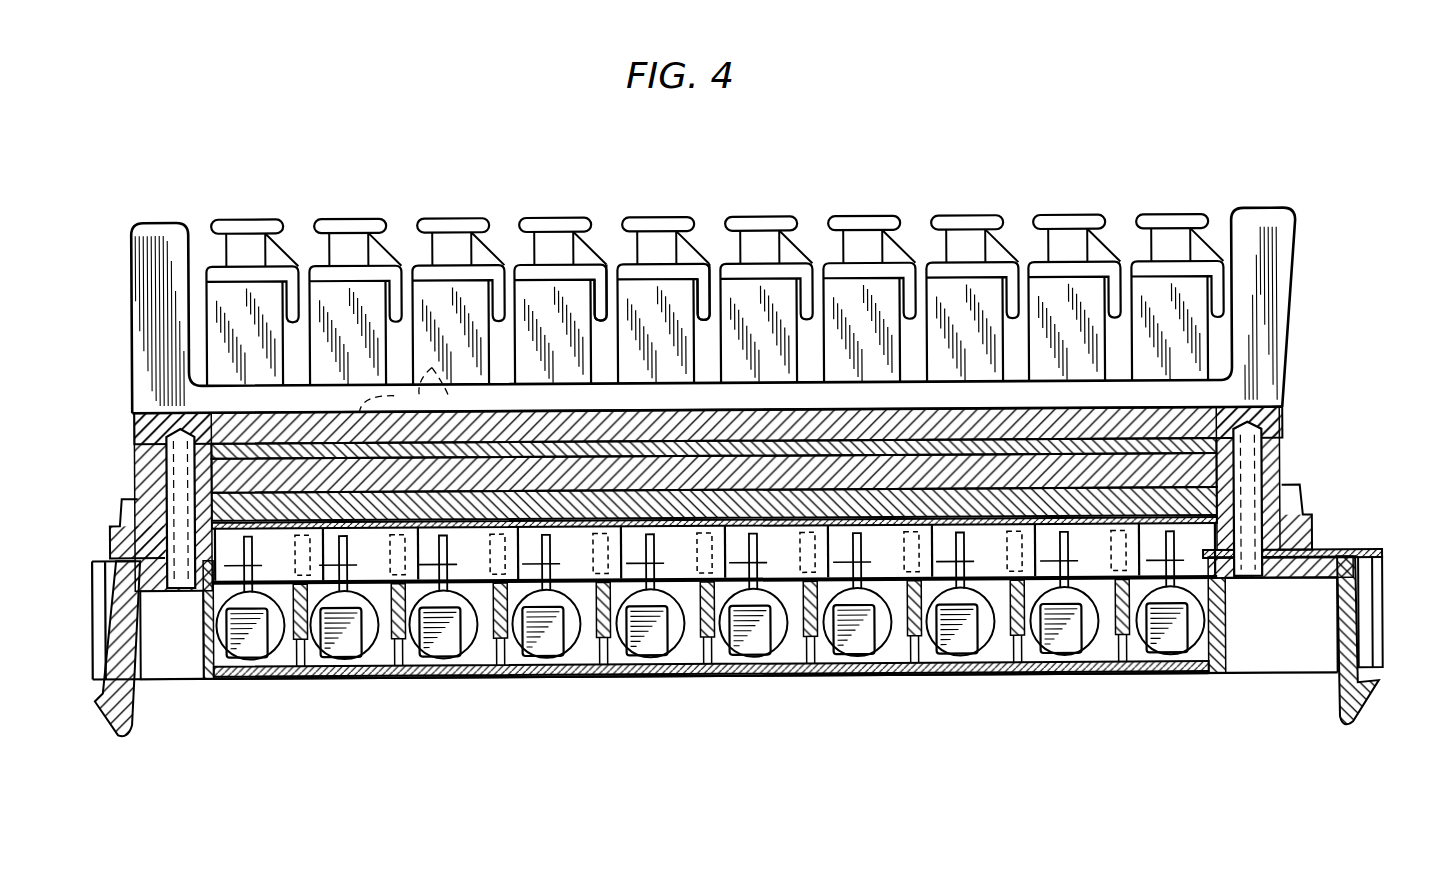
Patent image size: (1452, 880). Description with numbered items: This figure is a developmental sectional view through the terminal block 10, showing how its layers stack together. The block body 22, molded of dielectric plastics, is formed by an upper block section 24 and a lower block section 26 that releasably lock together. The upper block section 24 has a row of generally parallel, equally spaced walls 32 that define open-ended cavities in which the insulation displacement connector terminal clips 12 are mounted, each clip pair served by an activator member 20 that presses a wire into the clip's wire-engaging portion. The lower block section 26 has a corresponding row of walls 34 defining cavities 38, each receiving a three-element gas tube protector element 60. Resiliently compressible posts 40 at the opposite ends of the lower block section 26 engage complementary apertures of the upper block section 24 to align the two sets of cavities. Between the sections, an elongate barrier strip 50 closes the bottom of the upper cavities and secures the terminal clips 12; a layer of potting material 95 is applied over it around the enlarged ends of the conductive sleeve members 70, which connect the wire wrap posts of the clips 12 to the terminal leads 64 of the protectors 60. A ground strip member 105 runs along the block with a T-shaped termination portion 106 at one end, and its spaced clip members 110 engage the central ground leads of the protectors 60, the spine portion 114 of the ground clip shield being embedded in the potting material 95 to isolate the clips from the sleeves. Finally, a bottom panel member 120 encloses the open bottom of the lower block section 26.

The terminal block 10 is at (522, 783).
The insulation displacement connector terminal clip 12 is at (404, 374).
The activator member 20 is at (738, 218).
The block body 22 is at (114, 443).
The upper block section 24 is at (133, 408).
The lower block section 26 is at (1383, 580).
The walls 32 is at (720, 352).
The walls 34 is at (398, 650).
The cavities 38 is at (228, 680).
The resiliently compressible post 40 is at (120, 505).
The barrier strip 50 is at (1283, 428).
The protector element 60 is at (282, 655).
The terminal lead 64 is at (280, 560).
The conductive sleeve member 70 is at (167, 484).
The potting material 95 is at (1217, 450).
The ground strip member 105 is at (590, 620).
The T-shaped termination portion 106 is at (1355, 553).
The clip member 110 is at (352, 640).
The spine portion 114 is at (1217, 488).
The bottom panel member 120 is at (732, 680).